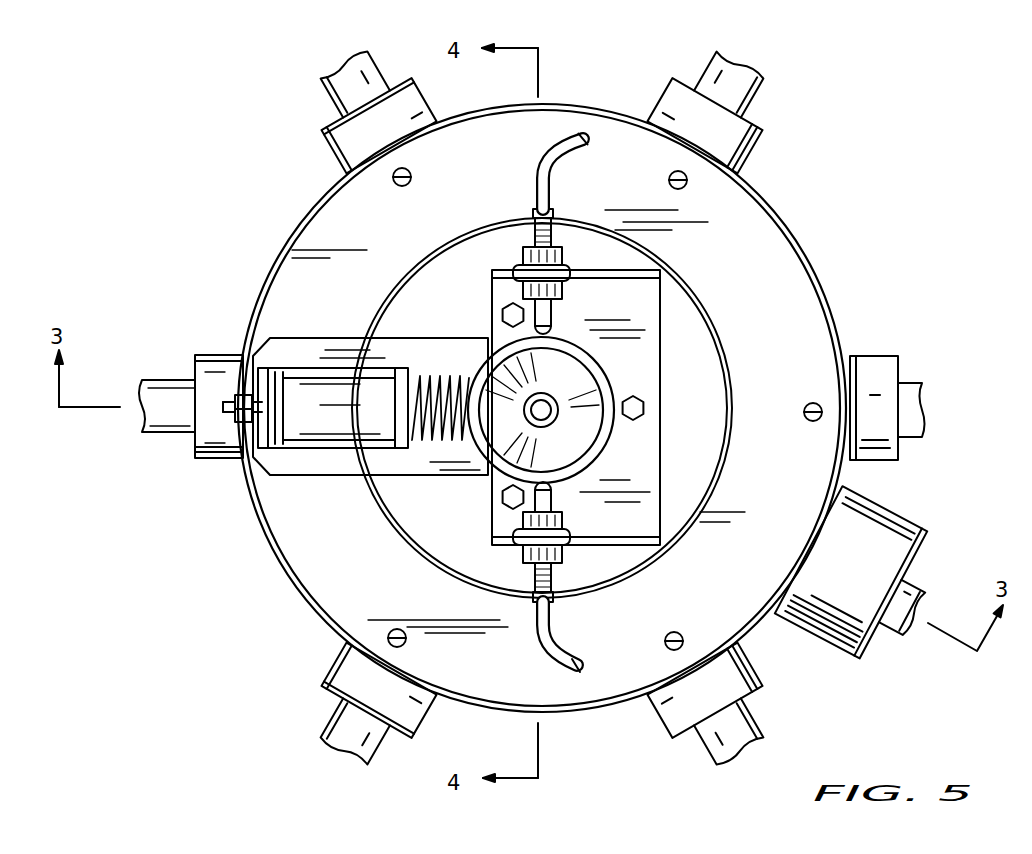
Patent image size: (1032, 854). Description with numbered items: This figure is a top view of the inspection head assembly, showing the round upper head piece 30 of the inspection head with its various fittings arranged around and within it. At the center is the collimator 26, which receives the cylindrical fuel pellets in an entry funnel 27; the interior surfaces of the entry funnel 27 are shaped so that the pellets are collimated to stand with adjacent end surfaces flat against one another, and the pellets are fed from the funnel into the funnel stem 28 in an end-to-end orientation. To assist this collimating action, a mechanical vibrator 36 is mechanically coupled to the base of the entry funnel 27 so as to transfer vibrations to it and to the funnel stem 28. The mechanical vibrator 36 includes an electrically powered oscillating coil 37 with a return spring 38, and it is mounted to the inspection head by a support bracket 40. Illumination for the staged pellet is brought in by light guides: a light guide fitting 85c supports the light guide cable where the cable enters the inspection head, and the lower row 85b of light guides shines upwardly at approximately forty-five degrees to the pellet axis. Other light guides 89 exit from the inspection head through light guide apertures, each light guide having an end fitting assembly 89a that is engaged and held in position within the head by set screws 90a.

The collimator 26 is at (630, 386).
The entry funnel 27 is at (598, 448).
The funnel stem 28 is at (553, 399).
The upper head piece 30 is at (542, 408).
The mechanical vibrator 36 is at (340, 459).
The oscillating coil 37 is at (363, 392).
The return spring 38 is at (419, 440).
The support bracket 40 is at (285, 350).
The lower row of light guides 85b is at (898, 627).
The light guide fitting 85c is at (855, 530).
The light guide 89 is at (337, 78).
The light guide end fitting assembly 89a is at (330, 157).
The set screw 90a is at (412, 176).